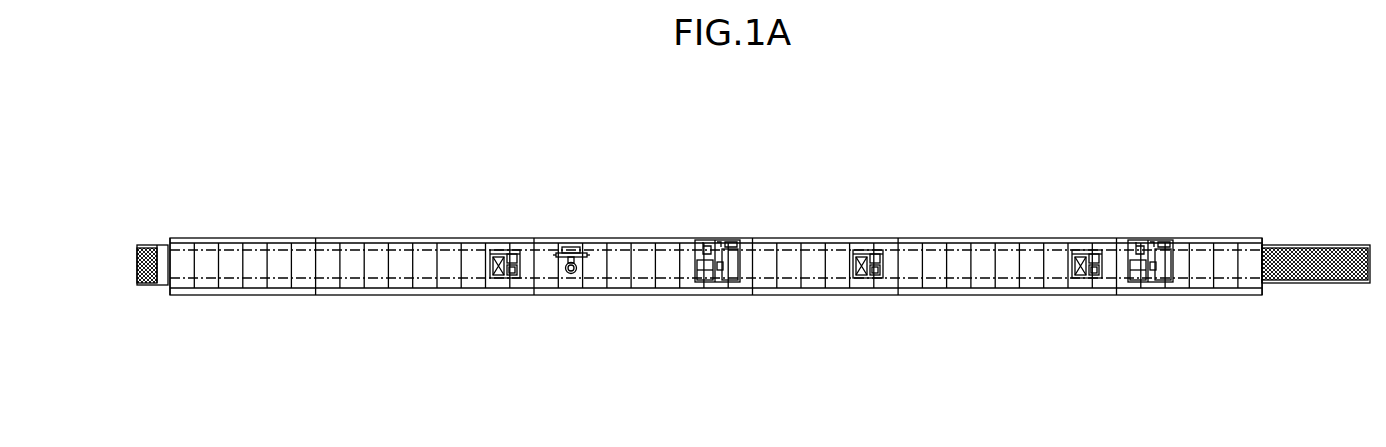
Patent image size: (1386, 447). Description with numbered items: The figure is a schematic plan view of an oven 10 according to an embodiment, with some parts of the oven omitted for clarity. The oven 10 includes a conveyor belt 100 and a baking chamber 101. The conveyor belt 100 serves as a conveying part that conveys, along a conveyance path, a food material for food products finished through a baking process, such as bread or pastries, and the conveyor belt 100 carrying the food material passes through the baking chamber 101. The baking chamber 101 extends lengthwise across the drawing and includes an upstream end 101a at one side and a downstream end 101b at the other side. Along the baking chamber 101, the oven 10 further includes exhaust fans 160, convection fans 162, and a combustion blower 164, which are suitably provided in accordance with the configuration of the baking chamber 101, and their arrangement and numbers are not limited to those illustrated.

The oven 10 is at (187, 124).
The conveyor belt 100 is at (156, 250).
The baking chamber 101 is at (252, 237).
The upstream end 101a is at (170, 267).
The downstream end 101b is at (1278, 282).
The exhaust fans 160 is at (500, 250).
The convection fans 162 is at (705, 242).
The combustion blower 164 is at (570, 247).